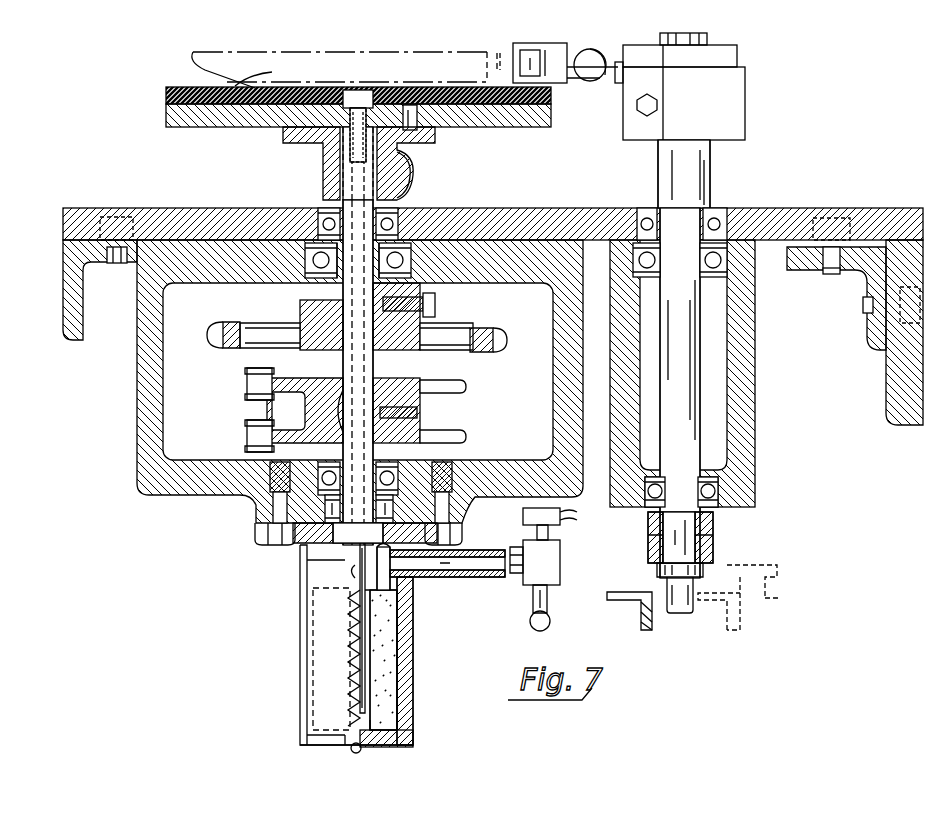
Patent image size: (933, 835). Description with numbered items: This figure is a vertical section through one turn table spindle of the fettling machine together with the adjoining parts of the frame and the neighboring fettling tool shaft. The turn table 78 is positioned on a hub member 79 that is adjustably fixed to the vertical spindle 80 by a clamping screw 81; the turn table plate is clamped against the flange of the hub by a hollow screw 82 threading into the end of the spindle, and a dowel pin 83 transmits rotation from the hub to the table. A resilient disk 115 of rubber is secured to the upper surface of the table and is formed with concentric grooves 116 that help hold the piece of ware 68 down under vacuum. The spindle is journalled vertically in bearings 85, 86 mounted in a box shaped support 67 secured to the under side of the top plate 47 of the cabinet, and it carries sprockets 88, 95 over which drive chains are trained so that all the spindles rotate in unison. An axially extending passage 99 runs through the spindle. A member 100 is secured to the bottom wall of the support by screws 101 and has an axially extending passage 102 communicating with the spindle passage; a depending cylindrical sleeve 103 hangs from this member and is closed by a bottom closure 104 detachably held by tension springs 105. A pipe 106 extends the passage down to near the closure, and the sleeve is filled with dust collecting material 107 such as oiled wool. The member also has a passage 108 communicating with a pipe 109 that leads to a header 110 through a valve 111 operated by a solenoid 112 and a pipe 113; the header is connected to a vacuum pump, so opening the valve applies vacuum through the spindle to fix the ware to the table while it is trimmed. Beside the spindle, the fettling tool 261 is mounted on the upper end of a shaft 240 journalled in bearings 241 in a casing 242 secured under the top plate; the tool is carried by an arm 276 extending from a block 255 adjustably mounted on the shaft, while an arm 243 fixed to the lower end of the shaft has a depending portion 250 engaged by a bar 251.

The top plate 47 is at (805, 212).
The box shaped support 67 is at (478, 468).
The piece of ware 68 is at (282, 72).
The turn table 78 is at (510, 127).
The hub member 79 is at (323, 156).
The spindle 80 is at (343, 190).
The clamping screw 81 is at (412, 175).
The hollow screw 82 is at (365, 92).
The dowel pin 83 is at (410, 130).
The bearing 85 is at (452, 222).
The bearing 86 is at (395, 468).
The sprocket 88 is at (472, 325).
The sprocket 95 is at (410, 380).
The axially extending passage 99 is at (330, 210).
The member 100 is at (300, 545).
The screw 101 is at (256, 534).
The axially extending passage 102 is at (358, 565).
The cylindrical sleeve 103 is at (413, 618).
The bottom closure 104 is at (413, 742).
The tension spring 105 is at (348, 665).
The pipe 106 is at (397, 638).
The dust collecting material 107 is at (397, 670).
The passage 108 is at (396, 585).
The pipe 109 is at (452, 558).
The header 110 is at (530, 625).
The valve 111 is at (553, 577).
The solenoid 112 is at (523, 519).
The pipe 113 is at (547, 606).
The disk 115 is at (552, 100).
The concentric groove 116 is at (192, 86).
The shaft 240 is at (705, 190).
The bearing 241 is at (722, 262).
The casing 242 is at (752, 413).
The arm 243 is at (713, 530).
The depending portion 250 is at (675, 613).
The bar 251 is at (630, 600).
The block 255 is at (680, 86).
The fettling tool 261 is at (455, 52).
The arm 276 is at (600, 82).